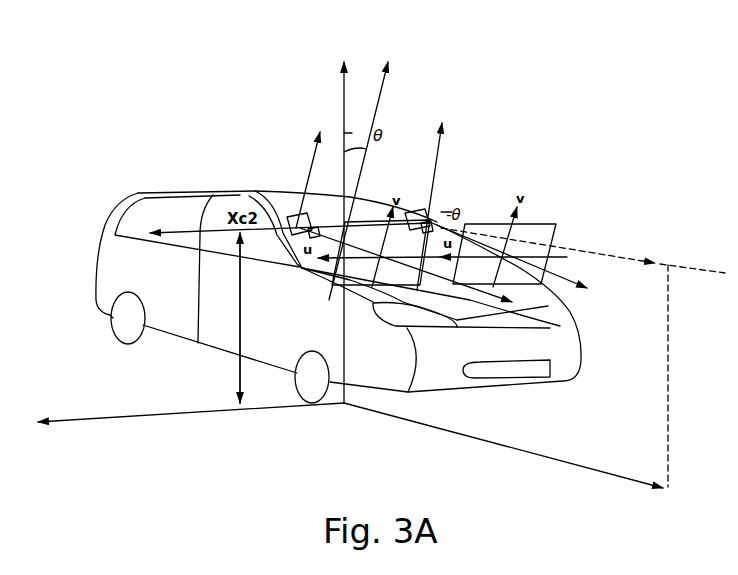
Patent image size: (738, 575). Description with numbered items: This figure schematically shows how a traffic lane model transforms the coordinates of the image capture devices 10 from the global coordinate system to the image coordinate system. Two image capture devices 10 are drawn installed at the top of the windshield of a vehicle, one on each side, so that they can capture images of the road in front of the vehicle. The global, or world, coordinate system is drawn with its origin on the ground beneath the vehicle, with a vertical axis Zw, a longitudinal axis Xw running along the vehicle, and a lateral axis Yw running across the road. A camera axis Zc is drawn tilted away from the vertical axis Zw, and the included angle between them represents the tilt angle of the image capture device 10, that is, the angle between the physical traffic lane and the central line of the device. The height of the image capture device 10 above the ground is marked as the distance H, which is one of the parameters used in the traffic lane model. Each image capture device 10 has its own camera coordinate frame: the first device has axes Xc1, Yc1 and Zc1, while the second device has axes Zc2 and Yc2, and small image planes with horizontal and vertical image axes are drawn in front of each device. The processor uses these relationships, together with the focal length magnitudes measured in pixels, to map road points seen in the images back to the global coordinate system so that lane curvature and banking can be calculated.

The image capture device 10 is at (292, 220).
The world Z axis Zw is at (345, 217).
The world X axis Xw is at (191, 407).
The world Y axis Yw is at (511, 364).
The camera Z axis Zc is at (368, 168).
The height of the image capture device H is at (250, 318).
The camera 1 Z axis Zc1 is at (439, 196).
The camera 2 Z axis Zc2 is at (316, 170).
The camera 1 X axis Xc1 is at (283, 221).
The camera 1 Y axis Yc1 is at (524, 262).
The camera 2 Y axis Yc2 is at (422, 275).